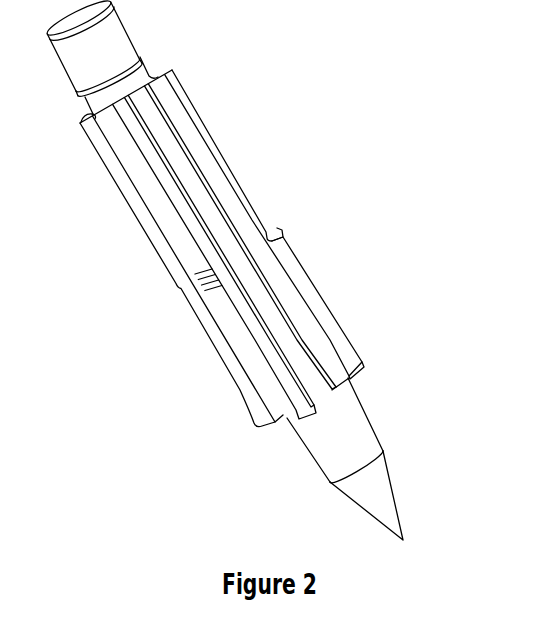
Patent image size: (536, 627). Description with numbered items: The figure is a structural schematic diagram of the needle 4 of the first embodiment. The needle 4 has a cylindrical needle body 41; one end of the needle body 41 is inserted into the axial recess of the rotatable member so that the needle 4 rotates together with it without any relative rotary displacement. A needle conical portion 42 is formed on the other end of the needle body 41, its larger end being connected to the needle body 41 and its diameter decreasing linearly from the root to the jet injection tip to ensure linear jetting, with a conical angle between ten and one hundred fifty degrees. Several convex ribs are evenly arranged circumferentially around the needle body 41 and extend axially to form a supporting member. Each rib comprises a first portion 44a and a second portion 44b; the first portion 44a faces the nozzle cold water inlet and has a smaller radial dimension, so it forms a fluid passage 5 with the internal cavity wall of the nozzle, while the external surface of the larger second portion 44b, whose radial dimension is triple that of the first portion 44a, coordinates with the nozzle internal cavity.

The needle 4 is at (235, 152).
The first portion 44a is at (193, 110).
The second portion 44b is at (305, 276).
The fluid passage 5 is at (210, 223).
The needle body 41 is at (310, 425).
The needle conical portion 42 is at (372, 492).